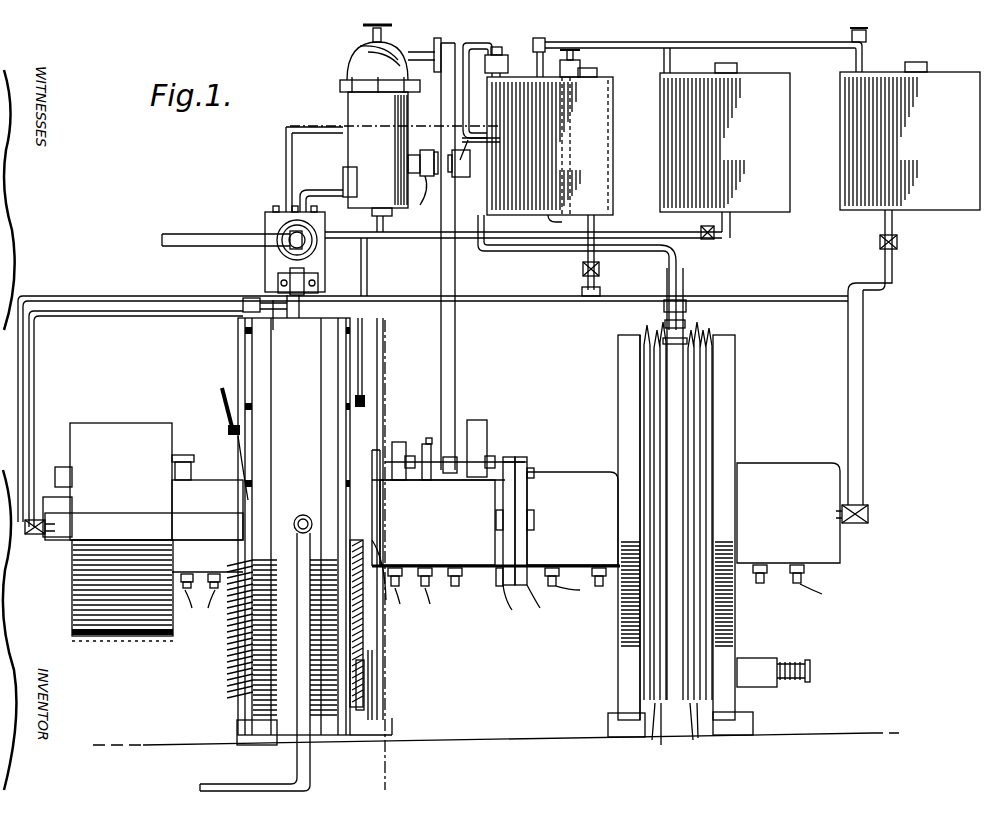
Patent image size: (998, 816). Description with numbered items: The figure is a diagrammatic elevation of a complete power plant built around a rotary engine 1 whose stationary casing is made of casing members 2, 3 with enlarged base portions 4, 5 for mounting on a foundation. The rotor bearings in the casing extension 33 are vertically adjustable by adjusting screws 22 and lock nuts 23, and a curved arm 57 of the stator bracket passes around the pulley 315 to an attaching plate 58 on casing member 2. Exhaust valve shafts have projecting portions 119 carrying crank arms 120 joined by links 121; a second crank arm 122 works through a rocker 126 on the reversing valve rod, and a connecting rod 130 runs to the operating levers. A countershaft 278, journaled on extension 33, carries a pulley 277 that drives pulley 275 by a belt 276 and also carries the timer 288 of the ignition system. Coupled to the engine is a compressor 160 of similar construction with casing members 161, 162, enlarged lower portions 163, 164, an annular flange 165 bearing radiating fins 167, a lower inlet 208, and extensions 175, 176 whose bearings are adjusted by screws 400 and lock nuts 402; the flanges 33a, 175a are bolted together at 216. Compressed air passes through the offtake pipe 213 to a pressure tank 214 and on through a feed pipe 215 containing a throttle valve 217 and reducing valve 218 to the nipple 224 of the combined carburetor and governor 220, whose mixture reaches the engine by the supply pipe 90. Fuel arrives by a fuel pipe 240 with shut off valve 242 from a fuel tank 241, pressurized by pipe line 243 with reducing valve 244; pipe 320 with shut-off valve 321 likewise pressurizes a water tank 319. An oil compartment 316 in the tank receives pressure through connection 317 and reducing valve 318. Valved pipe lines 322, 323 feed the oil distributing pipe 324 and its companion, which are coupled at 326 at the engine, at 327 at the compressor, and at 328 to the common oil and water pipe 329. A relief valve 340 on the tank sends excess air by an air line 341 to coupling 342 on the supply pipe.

The engine 1 is at (230, 353).
The casing member 2 is at (330, 225).
The casing member 3 is at (370, 672).
The enlarged base portion 4 is at (250, 728).
The enlarged base portion 5 is at (355, 728).
The adjusting screws 22 is at (316, 606).
The lock nuts 23 is at (214, 572).
The tubular extension 33 is at (480, 570).
The flange 33a is at (509, 607).
The curved arm 57 is at (112, 525).
The attaching plate 58 is at (236, 478).
The supply pipe 90 is at (312, 206).
The projecting portion 119 is at (378, 530).
The crank arm 120 is at (375, 693).
The links 121 is at (395, 582).
The second crank arm 122 is at (372, 412).
The rocker 126 is at (366, 342).
The connecting rod 130 is at (368, 390).
The compressor 160 is at (739, 410).
The casing member 161 is at (618, 672).
The casing member 162 is at (740, 612).
The enlarged lower portion 163 is at (608, 722).
The enlarged lower portion 164 is at (745, 722).
The annular flange 165 is at (693, 470).
The radiating ribs or fins 167 is at (660, 742).
The tubular extension 175 is at (568, 480).
The flange 175a is at (552, 606).
The tubular extension 176 is at (805, 566).
The check valve controlled inlet 208 is at (775, 665).
The offtake pipe 213 is at (526, 253).
The pressure tank 214 is at (548, 224).
The feed pipe 215 is at (480, 160).
The bolts 216 is at (534, 522).
The throttle valve 217 is at (470, 165).
The reducing valve 218 is at (422, 202).
The combined carburetor and governor 220 is at (346, 106).
The nipple 224 is at (412, 158).
The fuel pipe 240 is at (627, 232).
The fuel tank 241 is at (775, 213).
The shut off valve 242 is at (704, 239).
The pipe line 243 is at (600, 46).
The reducing valve 244 is at (548, 42).
The pulley 275 is at (437, 50).
The belt 276 is at (457, 352).
The pulley 277 is at (472, 425).
The countershaft 278 is at (508, 457).
The commutator or timer 288 is at (428, 444).
The pulley 315 is at (102, 423).
The oil compartment 316 is at (613, 140).
The connection 317 is at (570, 76).
The reducing valve 318 is at (580, 54).
The water tank 319 is at (945, 72).
The pipe 320 is at (750, 42).
The shut-off valve 321 is at (868, 32).
The valved pipe line 322 is at (600, 270).
The valved pipe line 323 is at (895, 262).
The oil distributing pipe 324 is at (808, 294).
The coupling 326 is at (811, 302).
The coupling 327 is at (862, 523).
The coupling 328 is at (250, 298).
The common oil and water pipe 329 is at (276, 322).
The relief valve 340 is at (505, 52).
The air line 341 is at (474, 42).
The coupling 342 is at (285, 178).
The adjusting screws 400 is at (703, 598).
The lock nuts 402 is at (598, 566).